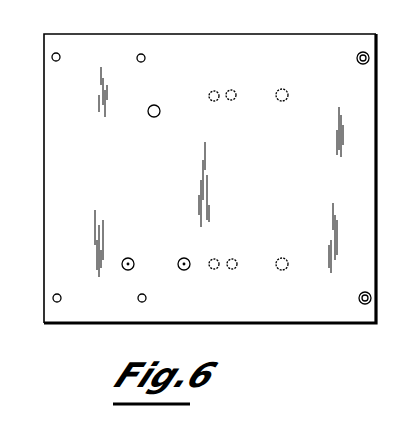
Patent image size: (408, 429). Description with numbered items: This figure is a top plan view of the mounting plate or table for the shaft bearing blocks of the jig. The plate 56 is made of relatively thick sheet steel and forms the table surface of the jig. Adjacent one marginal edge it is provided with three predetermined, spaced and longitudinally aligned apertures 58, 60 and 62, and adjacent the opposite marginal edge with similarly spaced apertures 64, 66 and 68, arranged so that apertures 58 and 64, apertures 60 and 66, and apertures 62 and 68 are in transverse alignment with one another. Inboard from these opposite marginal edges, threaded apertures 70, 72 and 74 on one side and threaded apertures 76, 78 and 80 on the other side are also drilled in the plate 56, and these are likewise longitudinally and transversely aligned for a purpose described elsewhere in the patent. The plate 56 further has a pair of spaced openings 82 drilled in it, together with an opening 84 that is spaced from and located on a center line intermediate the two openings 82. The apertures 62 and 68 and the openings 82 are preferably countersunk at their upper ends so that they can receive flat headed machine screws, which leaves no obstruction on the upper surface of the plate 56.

The plate 56 is at (371, 207).
The aperture 58 is at (60, 55).
The aperture 60 is at (145, 59).
The aperture 62 is at (357, 62).
The aperture 64 is at (61, 296).
The aperture 66 is at (142, 294).
The aperture 68 is at (359, 298).
The threaded aperture 70 is at (214, 101).
The threaded aperture 72 is at (230, 90).
The threaded aperture 74 is at (279, 90).
The threaded aperture 76 is at (212, 270).
The threaded aperture 78 is at (232, 270).
The threaded aperture 80 is at (282, 271).
The spaced openings 82 is at (178, 262).
The opening 84 is at (153, 117).